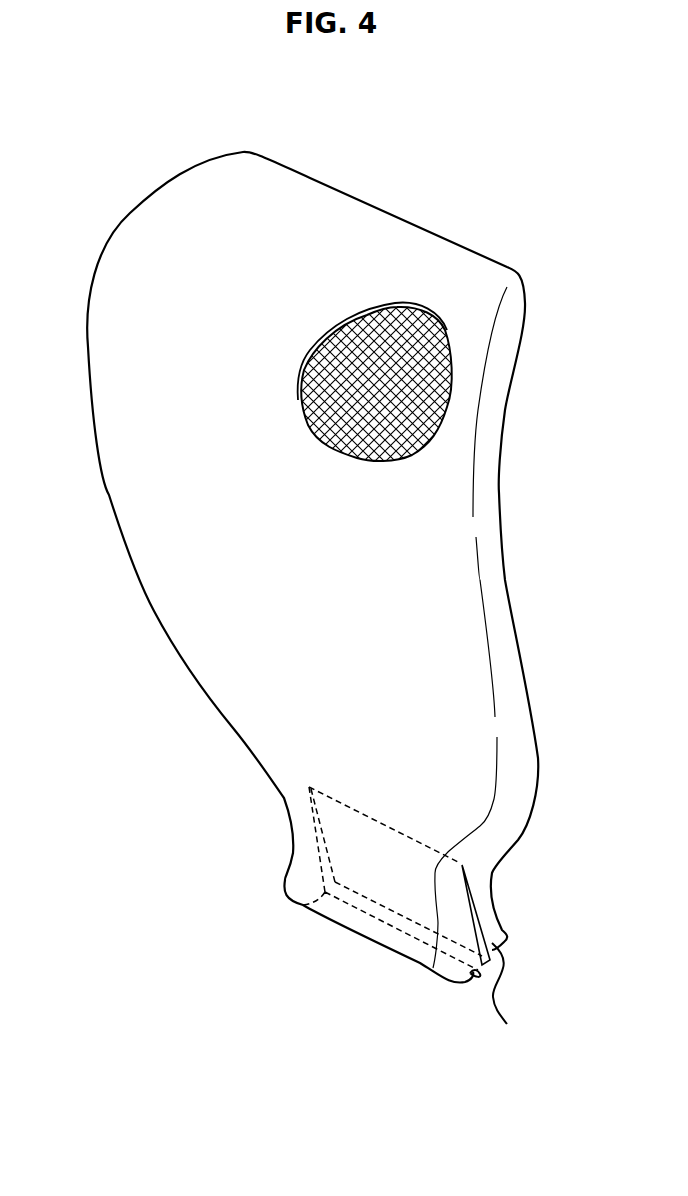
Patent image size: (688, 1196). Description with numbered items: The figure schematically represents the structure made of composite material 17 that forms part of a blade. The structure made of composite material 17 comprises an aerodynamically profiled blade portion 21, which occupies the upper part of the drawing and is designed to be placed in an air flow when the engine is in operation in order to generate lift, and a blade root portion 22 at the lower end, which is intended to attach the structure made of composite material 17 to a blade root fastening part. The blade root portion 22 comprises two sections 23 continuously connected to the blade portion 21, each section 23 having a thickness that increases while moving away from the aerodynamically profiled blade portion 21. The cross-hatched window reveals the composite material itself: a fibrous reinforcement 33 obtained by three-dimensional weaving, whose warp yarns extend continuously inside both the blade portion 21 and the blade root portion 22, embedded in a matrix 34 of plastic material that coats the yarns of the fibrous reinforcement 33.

The structure made of composite material 17 is at (88, 350).
The aerodynamically profiled blade portion 21 is at (567, 272).
The blade root portion 22 is at (567, 842).
The section 23 is at (507, 1024).
The fibrous reinforcement 33 is at (380, 383).
The matrix 34 is at (404, 309).